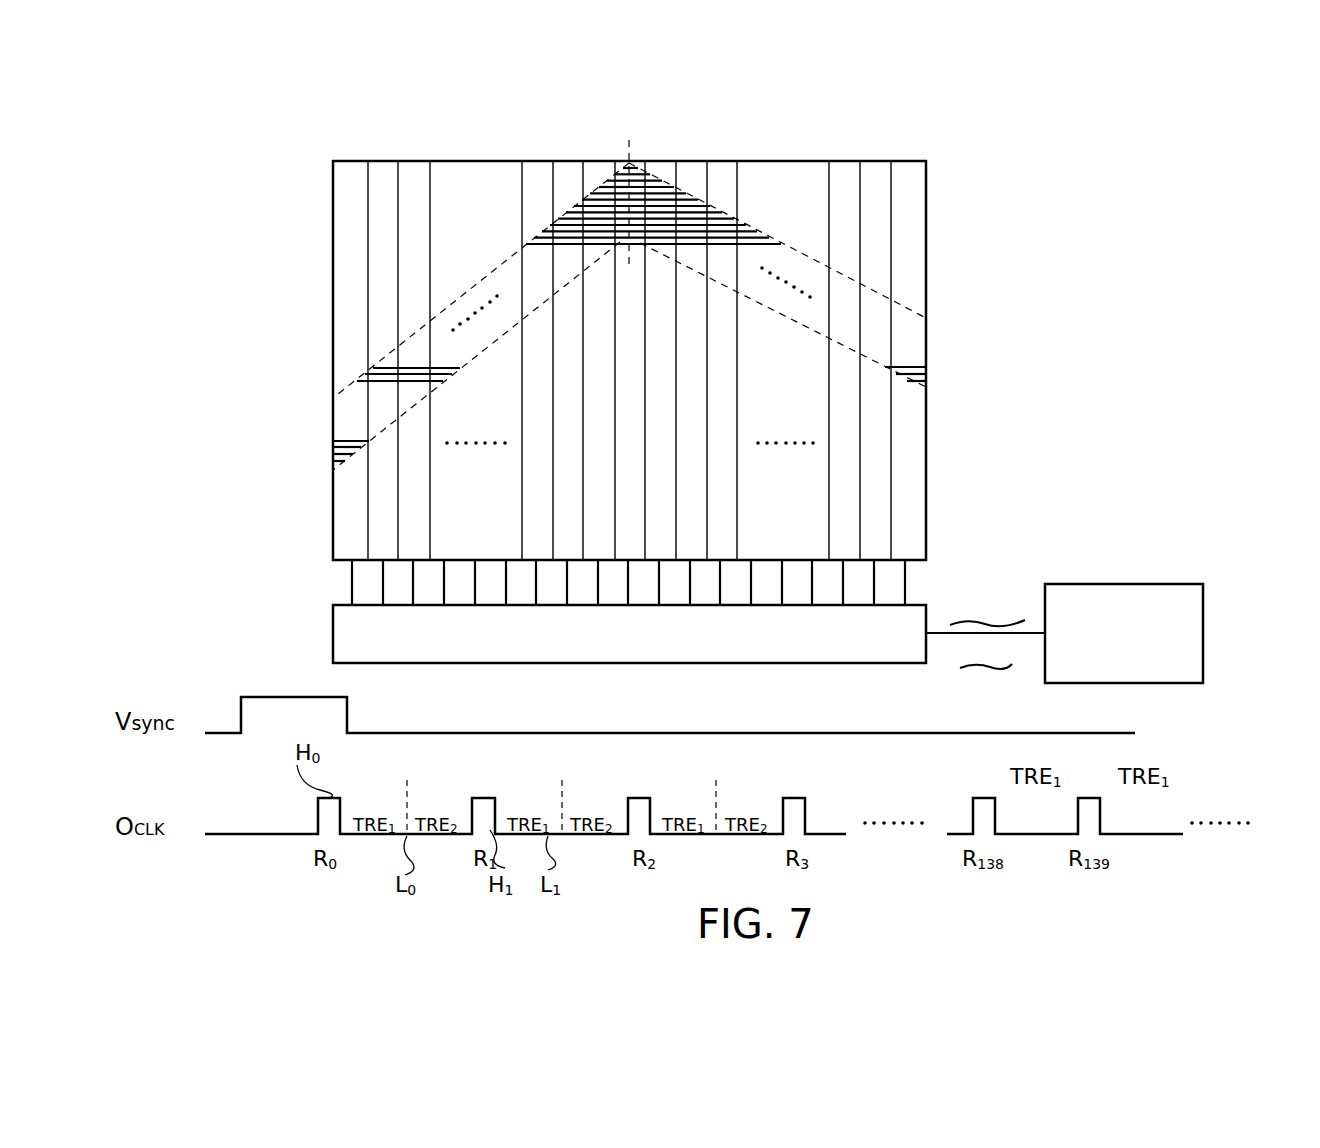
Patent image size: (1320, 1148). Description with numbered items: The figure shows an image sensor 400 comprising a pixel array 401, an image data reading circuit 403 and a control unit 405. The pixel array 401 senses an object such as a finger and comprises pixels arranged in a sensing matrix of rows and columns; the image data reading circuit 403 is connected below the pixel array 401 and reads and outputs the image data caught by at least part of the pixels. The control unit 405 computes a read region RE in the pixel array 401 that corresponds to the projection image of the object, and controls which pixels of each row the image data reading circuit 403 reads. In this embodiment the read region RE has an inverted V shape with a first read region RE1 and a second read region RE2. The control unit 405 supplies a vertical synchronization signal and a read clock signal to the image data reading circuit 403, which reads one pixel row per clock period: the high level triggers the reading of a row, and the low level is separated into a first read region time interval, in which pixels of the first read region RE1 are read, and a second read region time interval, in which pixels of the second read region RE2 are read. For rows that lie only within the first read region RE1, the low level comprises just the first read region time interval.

The image sensor 400 is at (1155, 198).
The pixel array 401 is at (907, 160).
The image data reading circuit 403 is at (333, 633).
The control unit 405 is at (1124, 584).
The read region RE is at (907, 287).
The first read region RE1 is at (603, 183).
The second read region RE2 is at (662, 183).